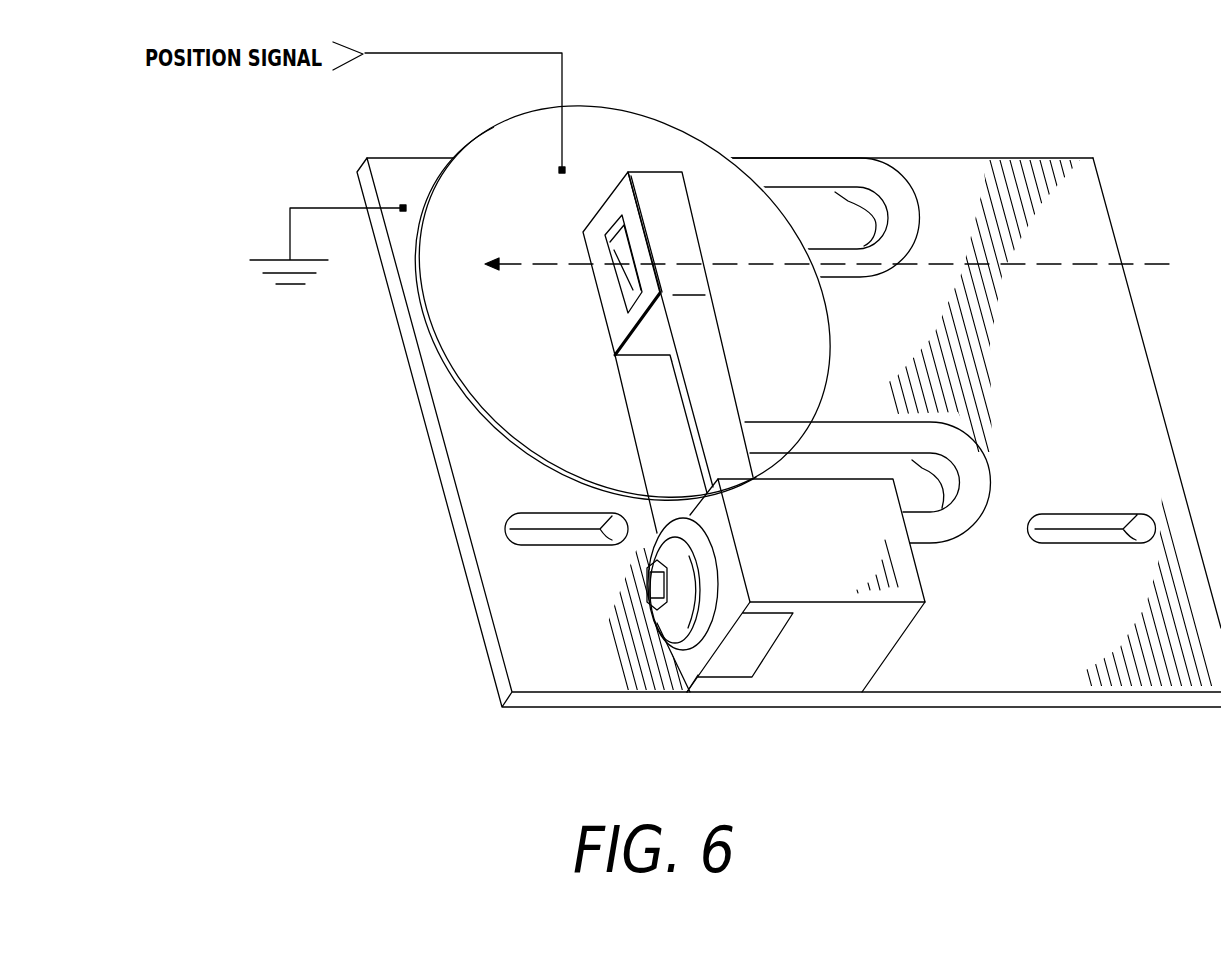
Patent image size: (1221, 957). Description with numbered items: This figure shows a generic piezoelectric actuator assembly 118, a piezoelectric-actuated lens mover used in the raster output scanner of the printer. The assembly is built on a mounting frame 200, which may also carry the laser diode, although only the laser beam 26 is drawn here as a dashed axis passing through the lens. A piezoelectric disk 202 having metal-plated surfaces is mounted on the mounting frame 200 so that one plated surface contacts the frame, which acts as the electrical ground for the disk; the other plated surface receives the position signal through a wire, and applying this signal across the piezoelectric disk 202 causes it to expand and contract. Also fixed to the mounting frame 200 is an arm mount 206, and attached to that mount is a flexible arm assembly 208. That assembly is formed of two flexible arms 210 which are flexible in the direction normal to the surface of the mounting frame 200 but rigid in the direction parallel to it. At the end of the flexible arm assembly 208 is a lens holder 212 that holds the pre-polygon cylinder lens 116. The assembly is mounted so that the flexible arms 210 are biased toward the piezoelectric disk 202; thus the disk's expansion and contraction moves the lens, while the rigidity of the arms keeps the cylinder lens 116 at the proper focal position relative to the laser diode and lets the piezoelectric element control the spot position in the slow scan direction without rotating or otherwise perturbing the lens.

The laser beam 26 is at (1145, 262).
The pre-polygon cylinder lens 116 is at (630, 287).
The piezoelectric actuator assembly 118 is at (762, 88).
The mounting frame 200 is at (1037, 162).
The piezoelectric disk 202 is at (602, 127).
The arm mount 206 is at (820, 678).
The flexible arm assembly 208 is at (755, 368).
The flexible arms 210 is at (703, 388).
The lens holder 212 is at (617, 327).